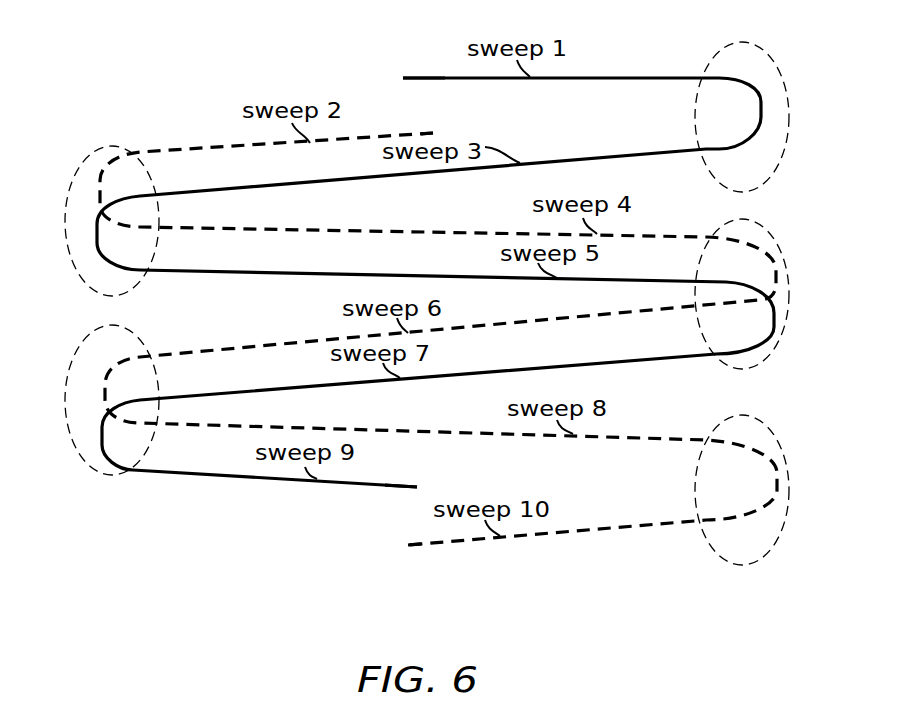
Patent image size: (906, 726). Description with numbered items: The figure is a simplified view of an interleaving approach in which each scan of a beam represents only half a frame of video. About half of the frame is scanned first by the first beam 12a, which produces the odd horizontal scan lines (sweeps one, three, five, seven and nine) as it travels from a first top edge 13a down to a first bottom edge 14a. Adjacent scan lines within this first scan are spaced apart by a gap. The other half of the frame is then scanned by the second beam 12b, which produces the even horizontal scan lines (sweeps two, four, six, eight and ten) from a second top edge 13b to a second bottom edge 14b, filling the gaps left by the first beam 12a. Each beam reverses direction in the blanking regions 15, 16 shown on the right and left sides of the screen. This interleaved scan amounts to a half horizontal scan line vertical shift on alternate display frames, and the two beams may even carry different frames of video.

The first beam 12a is at (590, 77).
The second beam 12b is at (208, 148).
The first top edge 13a is at (403, 77).
The second top edge 13b is at (420, 133).
The first bottom edge 14a is at (417, 487).
The second bottom edge 14b is at (410, 545).
The blanking region 15 is at (769, 56).
The blanking region 16 is at (88, 157).